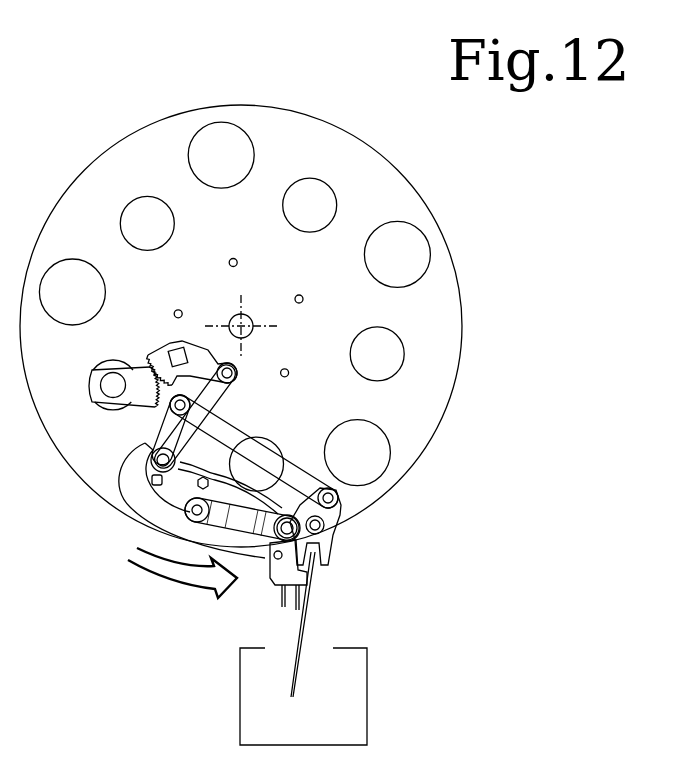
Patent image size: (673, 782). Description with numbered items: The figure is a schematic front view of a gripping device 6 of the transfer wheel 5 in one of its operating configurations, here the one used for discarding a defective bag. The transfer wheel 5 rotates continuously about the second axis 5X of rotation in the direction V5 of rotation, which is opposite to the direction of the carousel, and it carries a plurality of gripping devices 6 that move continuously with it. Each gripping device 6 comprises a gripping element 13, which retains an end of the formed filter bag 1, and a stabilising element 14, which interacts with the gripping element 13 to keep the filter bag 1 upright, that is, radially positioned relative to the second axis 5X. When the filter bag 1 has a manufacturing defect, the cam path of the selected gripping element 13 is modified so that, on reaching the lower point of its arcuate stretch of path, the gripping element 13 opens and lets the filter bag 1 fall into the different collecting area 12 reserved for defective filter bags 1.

The transfer wheel 5 is at (350, 105).
The second axis of rotation 5X is at (243, 325).
The gripping device 6 is at (242, 420).
The gripping element 13 is at (350, 556).
The stabilising element 14 is at (265, 598).
The filter bag 1 is at (280, 672).
The different collecting area 12 is at (345, 697).
The direction of rotation of the transfer wheel V5 is at (155, 578).